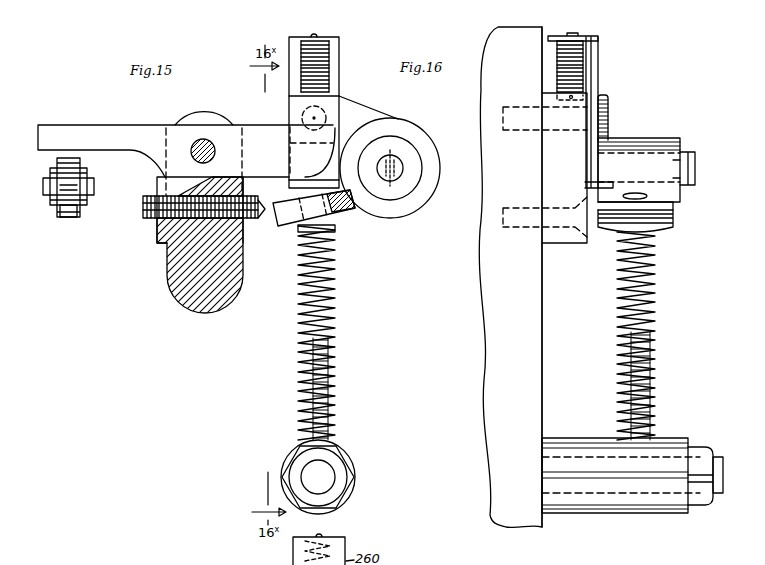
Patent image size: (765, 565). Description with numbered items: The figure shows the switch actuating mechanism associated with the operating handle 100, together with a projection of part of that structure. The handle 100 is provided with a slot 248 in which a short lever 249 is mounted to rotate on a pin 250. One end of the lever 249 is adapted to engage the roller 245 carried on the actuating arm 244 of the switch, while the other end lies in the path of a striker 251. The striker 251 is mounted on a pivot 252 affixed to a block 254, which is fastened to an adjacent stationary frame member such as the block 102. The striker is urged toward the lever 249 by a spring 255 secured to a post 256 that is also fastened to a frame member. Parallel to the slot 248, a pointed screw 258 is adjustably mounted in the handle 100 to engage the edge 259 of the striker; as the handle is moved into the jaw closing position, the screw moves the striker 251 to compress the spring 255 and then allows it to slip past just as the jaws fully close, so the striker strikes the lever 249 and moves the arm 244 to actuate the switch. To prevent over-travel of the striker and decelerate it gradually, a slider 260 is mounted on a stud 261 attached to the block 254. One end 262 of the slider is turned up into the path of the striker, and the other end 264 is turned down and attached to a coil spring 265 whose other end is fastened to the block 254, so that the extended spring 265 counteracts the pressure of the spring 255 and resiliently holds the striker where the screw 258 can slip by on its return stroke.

In FIG. 15, the lever 249 is at (98, 128).
In FIG. 15, the slot 248 is at (217, 122).
In FIG. 15, the pin 250 is at (217, 152).
In FIG. 15, the actuating arm 244 is at (52, 198).
In FIG. 15, the roller 245 is at (68, 218).
In FIG. 15, the pointed screw 258 is at (157, 221).
In FIG. 15, the handle 100 is at (182, 298).
In FIG. 15, the slider 260 is at (339, 52).
In FIG. 16, the slider 260 is at (599, 80).
In FIG. 15, the coil spring 265 is at (330, 83).
In FIG. 16, the coil spring 265 is at (583, 60).
In FIG. 15, the block 254 is at (369, 118).
In FIG. 16, the block 254 is at (566, 240).
In FIG. 15, the pivot 252 is at (401, 158).
In FIG. 16, the pivot 252 is at (694, 167).
In FIG. 15, the edge 259 is at (270, 226).
In FIG. 16, the edge 259 is at (661, 221).
In FIG. 15, the striker 251 is at (343, 214).
In FIG. 16, the striker 251 is at (675, 201).
In FIG. 15, the spring 255 is at (334, 330).
In FIG. 16, the spring 255 is at (656, 300).
In FIG. 15, the post 256 is at (327, 469).
In FIG. 16, the post 256 is at (663, 440).
In FIG. 16, the end of slider 264 is at (581, 37).
In FIG. 16, the stud 261 is at (609, 110).
In FIG. 16, the end of slider 262 is at (612, 183).
In FIG. 16, the block 102 is at (540, 344).